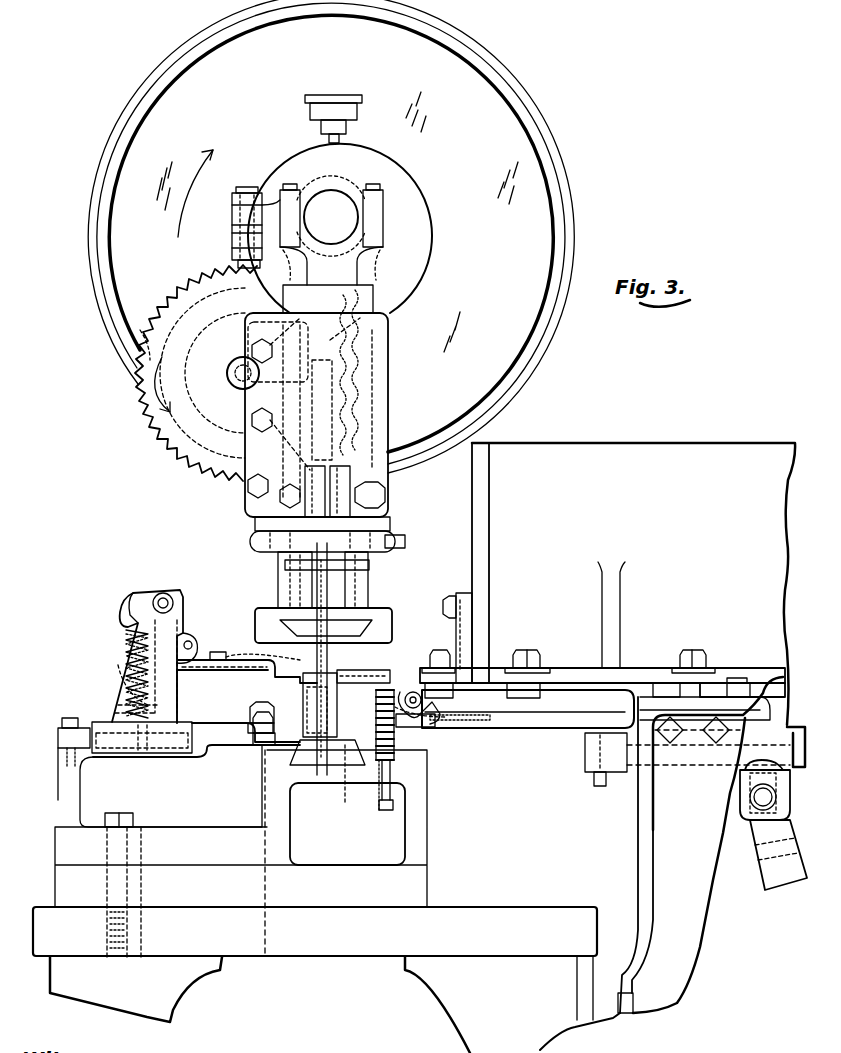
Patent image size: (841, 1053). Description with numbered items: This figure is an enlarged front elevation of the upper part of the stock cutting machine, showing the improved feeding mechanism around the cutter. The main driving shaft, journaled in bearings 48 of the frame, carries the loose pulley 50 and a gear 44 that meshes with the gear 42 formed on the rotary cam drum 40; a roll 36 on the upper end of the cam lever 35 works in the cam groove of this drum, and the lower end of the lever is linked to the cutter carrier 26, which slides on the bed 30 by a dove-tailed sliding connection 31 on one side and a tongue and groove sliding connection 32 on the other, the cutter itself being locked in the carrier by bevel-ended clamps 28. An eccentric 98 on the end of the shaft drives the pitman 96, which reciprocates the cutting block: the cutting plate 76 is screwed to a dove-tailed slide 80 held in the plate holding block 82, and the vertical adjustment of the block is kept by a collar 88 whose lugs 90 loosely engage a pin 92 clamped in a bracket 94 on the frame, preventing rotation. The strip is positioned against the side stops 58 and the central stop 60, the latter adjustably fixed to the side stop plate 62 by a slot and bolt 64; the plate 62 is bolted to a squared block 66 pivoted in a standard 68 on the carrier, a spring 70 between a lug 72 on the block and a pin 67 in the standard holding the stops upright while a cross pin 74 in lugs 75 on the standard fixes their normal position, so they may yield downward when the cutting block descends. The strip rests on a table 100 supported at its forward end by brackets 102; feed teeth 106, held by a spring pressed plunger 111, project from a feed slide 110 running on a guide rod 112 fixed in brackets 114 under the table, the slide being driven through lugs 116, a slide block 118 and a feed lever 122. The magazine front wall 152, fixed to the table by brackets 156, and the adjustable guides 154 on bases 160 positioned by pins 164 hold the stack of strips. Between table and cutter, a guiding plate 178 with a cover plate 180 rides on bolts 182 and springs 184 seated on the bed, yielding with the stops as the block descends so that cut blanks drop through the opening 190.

The loose pulley 50 is at (331, 236).
The bearings 48 is at (300, 156).
The gear 44 is at (370, 258).
The eccentric 98 is at (331, 216).
The pitman 96 is at (372, 276).
The gear 42 is at (175, 432).
The rotary cam drum 40 is at (205, 342).
The roll 36 is at (305, 367).
The cam lever 35 is at (335, 405).
The pin 92 is at (330, 472).
The bracket 94 is at (345, 470).
The lugs 90 is at (370, 520).
The collar 88 is at (385, 543).
The plate holding block 82 is at (372, 615).
The dove-tailed slide 80 is at (350, 628).
The cutting plate 76 is at (385, 633).
The dove-tailed sliding connection 31 is at (332, 770).
The squared block 66 is at (150, 640).
The lug 72 is at (131, 605).
The spring 70 is at (126, 640).
The pin 67 is at (118, 692).
The standard 68 is at (118, 705).
The cross pin 74 is at (195, 640).
The lugs 75 is at (205, 660).
The slot and bolt 64 is at (232, 660).
The side stop plate 62 is at (260, 680).
The central stop 60 is at (270, 680).
The side stops 58 is at (297, 672).
The cutter carrier 26 is at (212, 760).
The bevel-ended clamps 28 is at (258, 748).
The tongue and groove sliding connection 32 is at (90, 767).
The opening 190 is at (150, 850).
The bed 30 is at (290, 848).
The front wall 152 is at (489, 552).
The adjustable guides 154 is at (663, 440).
The brackets 156 is at (465, 640).
The pins 164 is at (535, 655).
The bases 160 is at (578, 672).
The table 100 is at (770, 688).
The cover plate 180 is at (408, 668).
The feed teeth 106 is at (346, 703).
The guiding plate 178 is at (425, 717).
The spring pressed plunger 111 is at (405, 722).
The feed slide 110 is at (550, 718).
The guide rod 112 is at (585, 745).
The brackets 114 is at (594, 778).
The springs 184 is at (396, 745).
The bolts 182 is at (394, 762).
The brackets 102 is at (652, 930).
The lugs 116 is at (742, 812).
The slide block 118 is at (765, 802).
The feed lever 122 is at (775, 887).